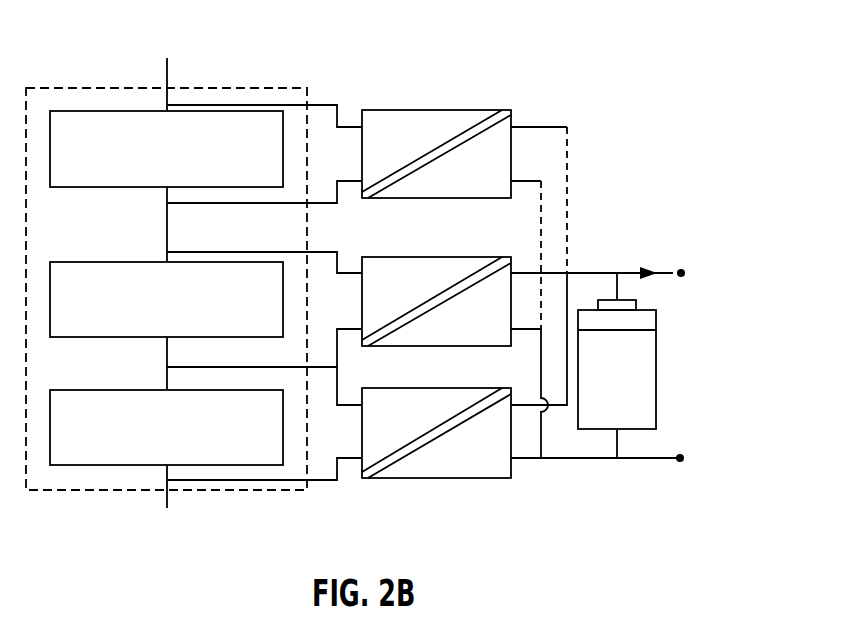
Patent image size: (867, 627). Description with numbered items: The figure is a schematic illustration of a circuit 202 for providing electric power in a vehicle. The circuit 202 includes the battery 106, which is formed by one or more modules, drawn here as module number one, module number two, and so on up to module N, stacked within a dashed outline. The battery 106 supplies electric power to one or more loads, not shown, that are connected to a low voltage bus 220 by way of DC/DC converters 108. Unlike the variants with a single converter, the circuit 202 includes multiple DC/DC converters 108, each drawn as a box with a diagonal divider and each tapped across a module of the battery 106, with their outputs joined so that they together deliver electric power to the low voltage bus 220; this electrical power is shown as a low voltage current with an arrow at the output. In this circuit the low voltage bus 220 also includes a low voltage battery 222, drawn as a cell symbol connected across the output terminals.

The battery 106 is at (98, 88).
The DC/DC converter 108 is at (411, 110).
The circuit 202 is at (631, 53).
The low voltage (LV) bus 220 is at (726, 389).
The low voltage battery 222 is at (635, 431).